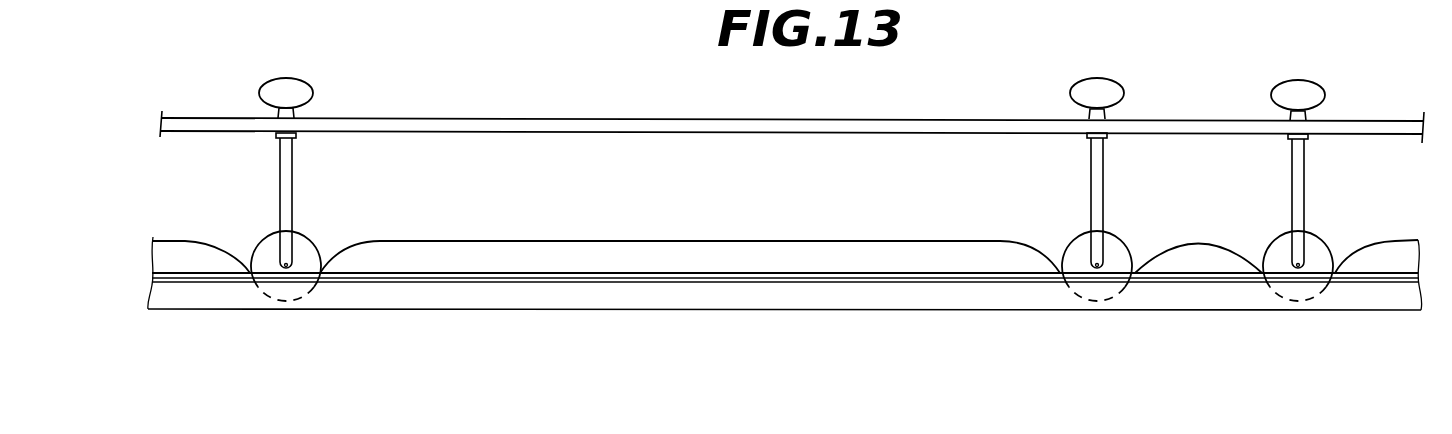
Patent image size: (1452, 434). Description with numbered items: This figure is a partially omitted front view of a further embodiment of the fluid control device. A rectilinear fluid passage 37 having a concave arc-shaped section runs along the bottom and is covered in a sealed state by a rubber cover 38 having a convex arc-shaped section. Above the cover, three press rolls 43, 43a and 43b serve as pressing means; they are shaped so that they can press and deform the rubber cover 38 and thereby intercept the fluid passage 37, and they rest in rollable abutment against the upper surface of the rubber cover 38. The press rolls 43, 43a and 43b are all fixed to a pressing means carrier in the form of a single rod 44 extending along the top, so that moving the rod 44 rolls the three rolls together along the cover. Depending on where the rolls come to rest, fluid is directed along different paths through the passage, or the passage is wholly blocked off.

The rectilinear fluid passage 37 is at (927, 298).
The rubber cover 38 is at (1195, 255).
The press roll 43 is at (1307, 247).
The press roll 43a is at (1082, 247).
The press roll 43b is at (298, 248).
The single rod 44 is at (625, 127).